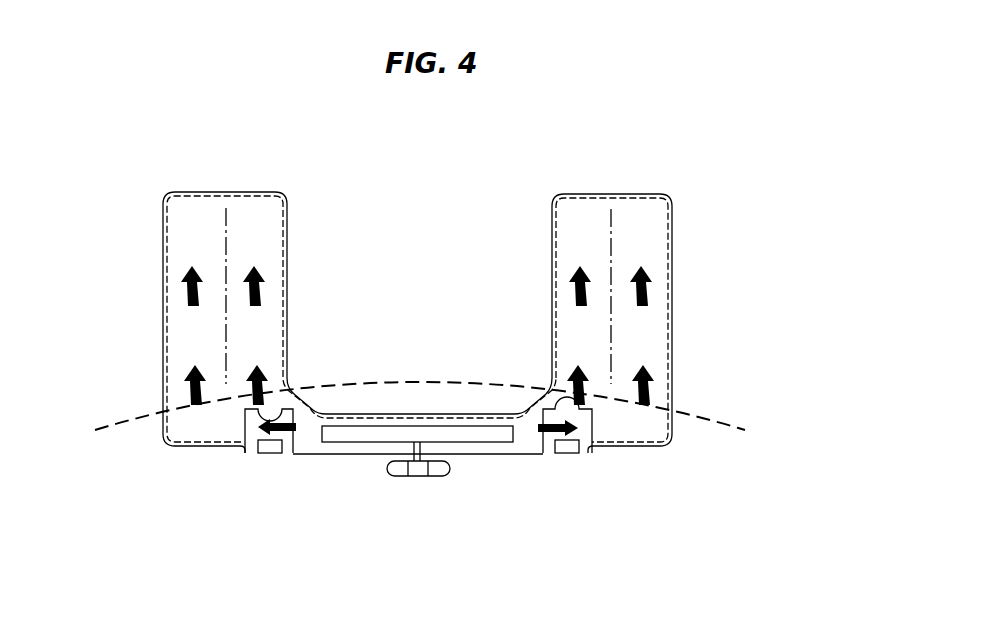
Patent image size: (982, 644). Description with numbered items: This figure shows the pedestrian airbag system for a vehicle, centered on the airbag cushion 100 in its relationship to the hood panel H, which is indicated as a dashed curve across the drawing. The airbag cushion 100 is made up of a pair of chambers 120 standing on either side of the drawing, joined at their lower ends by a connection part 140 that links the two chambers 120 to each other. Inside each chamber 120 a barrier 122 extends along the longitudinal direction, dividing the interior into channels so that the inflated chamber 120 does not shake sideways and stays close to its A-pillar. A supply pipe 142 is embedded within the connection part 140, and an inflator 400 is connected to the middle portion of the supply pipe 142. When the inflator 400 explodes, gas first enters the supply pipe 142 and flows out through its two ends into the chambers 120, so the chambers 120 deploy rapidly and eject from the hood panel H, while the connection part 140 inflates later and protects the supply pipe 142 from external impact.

The airbag cushion 100 is at (293, 198).
The chamber 120 is at (627, 194).
The barrier 122 is at (612, 230).
The connection part 140 is at (408, 414).
The supply pipe 142 is at (487, 443).
The inflator 400 is at (420, 478).
The hood panel H is at (697, 415).